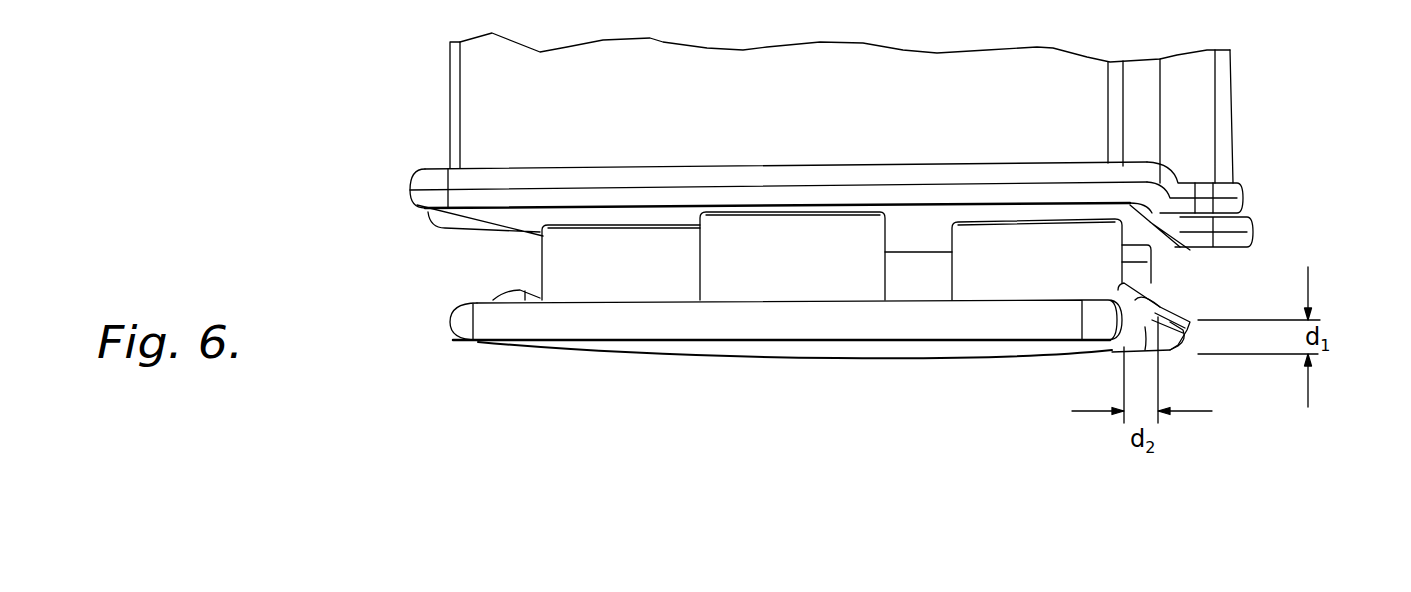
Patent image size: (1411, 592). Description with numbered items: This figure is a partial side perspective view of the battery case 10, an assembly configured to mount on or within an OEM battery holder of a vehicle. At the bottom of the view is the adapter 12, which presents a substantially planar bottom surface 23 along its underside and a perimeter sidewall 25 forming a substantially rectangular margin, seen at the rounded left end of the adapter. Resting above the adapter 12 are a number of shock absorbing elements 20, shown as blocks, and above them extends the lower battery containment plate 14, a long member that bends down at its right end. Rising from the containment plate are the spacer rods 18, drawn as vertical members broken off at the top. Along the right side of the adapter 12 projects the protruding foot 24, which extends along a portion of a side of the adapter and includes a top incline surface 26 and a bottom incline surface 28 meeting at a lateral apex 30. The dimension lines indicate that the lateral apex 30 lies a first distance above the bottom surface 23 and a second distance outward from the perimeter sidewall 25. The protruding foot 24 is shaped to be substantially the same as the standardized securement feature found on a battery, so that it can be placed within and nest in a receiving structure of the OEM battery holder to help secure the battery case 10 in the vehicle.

The battery case 10 is at (1340, 263).
The adapter 12 is at (726, 349).
The lower battery containment plate 14 is at (1262, 180).
The spacer rods 18 is at (1202, 107).
The shock absorbing elements 20 is at (562, 256).
The bottom surface 23 is at (868, 360).
The protruding foot 24 is at (1195, 300).
The perimeter sidewall 25 is at (438, 314).
The top incline surface 26 is at (1160, 285).
The bottom incline surface 28 is at (1178, 330).
The lateral apex 30 is at (1200, 305).